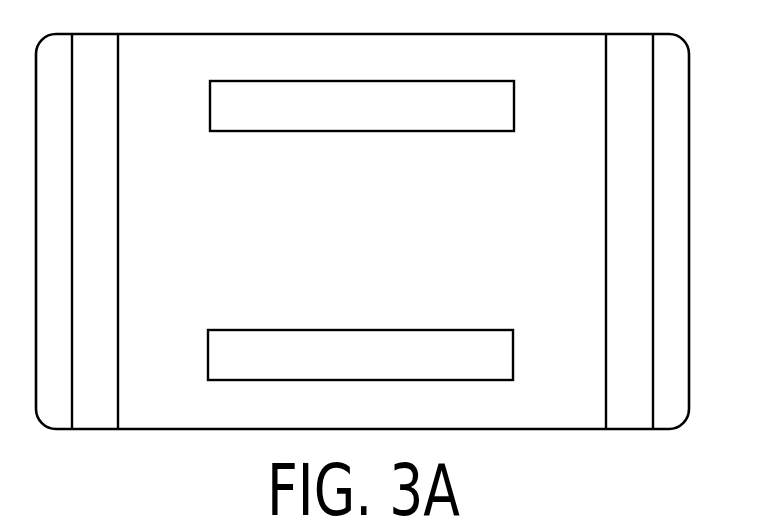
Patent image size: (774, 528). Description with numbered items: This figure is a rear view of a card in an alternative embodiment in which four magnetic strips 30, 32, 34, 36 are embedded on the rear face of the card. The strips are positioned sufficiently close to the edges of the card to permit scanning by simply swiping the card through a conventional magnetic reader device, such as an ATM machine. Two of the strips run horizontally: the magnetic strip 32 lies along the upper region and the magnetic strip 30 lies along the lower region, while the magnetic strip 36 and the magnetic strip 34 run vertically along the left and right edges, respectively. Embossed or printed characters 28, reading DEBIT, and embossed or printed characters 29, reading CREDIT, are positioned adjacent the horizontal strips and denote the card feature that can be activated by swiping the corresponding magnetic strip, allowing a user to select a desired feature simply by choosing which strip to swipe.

The embossed or printed characters 28 is at (394, 176).
The embossed or printed characters 29 is at (394, 295).
The magnetic strip 30 is at (490, 329).
The magnetic strip 32 is at (502, 132).
The magnetic strip 34 is at (653, 153).
The magnetic strip 36 is at (118, 283).